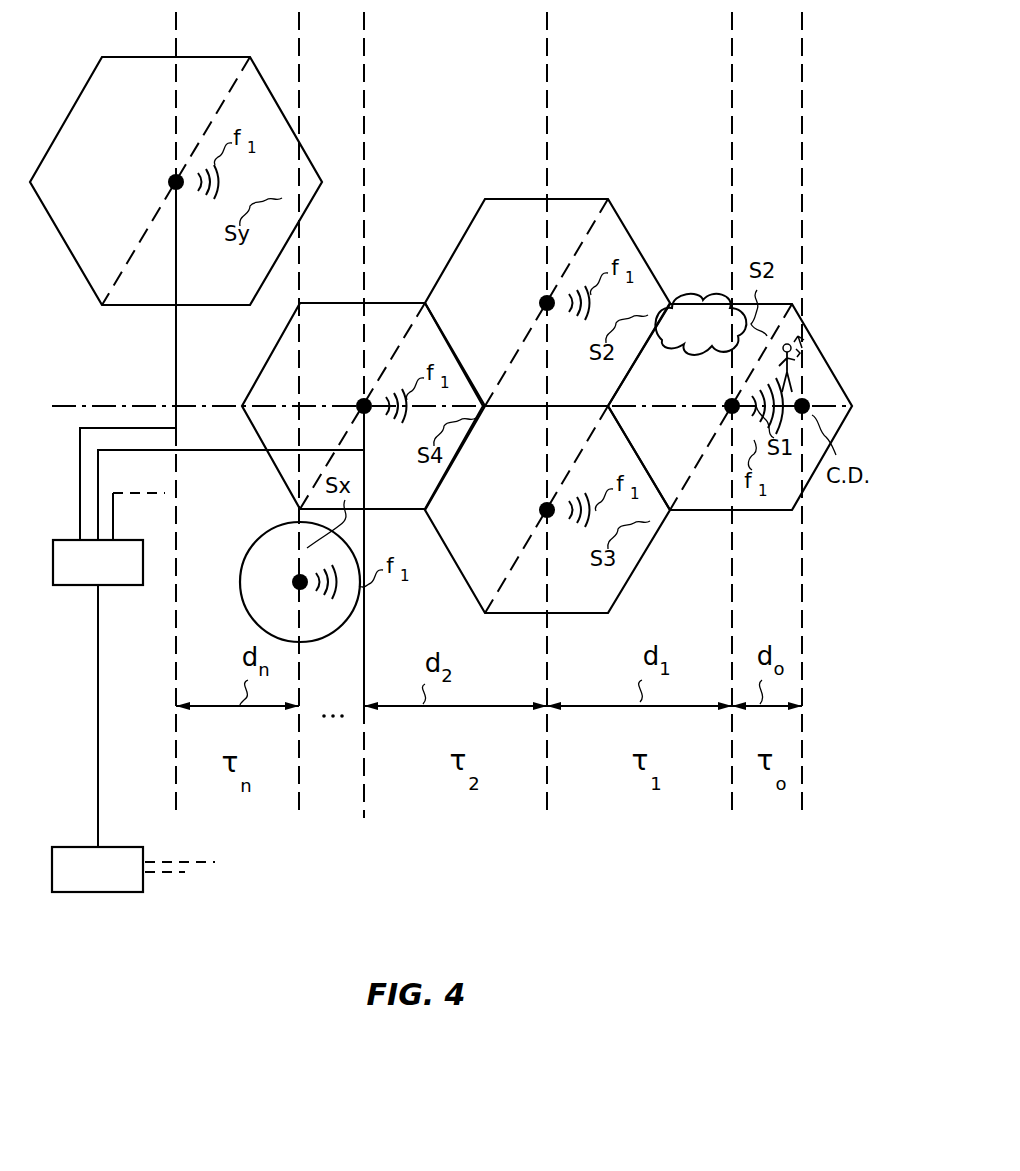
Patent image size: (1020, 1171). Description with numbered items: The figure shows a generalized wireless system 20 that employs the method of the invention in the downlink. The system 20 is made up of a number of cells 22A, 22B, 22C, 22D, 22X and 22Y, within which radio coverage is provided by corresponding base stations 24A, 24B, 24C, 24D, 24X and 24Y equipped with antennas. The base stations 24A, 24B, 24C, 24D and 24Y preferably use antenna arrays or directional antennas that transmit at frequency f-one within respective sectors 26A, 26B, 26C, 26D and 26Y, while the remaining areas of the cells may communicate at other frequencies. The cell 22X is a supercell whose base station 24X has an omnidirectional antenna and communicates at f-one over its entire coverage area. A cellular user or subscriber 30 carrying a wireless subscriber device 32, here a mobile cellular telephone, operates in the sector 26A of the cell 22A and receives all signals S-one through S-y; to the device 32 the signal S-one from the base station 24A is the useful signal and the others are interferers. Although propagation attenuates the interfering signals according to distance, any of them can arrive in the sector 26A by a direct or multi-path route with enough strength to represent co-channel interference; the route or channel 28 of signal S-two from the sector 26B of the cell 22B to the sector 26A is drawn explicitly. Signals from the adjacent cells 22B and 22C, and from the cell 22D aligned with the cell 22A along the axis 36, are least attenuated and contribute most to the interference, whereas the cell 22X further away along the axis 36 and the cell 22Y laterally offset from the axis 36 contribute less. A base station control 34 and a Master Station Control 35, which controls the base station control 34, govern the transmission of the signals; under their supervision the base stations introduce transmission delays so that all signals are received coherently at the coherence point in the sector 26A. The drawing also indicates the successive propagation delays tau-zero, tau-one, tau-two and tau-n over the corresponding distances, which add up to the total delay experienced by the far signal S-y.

The wireless system 20 is at (616, 77).
The cell Y 22Y is at (234, 57).
The base station Y 24Y is at (176, 182).
The sector Y 26Y is at (278, 125).
The cell D 22D is at (396, 304).
The base station D 24D is at (362, 404).
The sector D 26D is at (427, 332).
The cell B 22B is at (515, 198).
The base station B 24B is at (546, 303).
The sector B 26B is at (610, 234).
The cell C 22C is at (462, 579).
The base station C 24C is at (547, 511).
The sector C 26C is at (631, 555).
The cell A 22A is at (690, 511).
The base station A 24A is at (728, 413).
The sector A 26A is at (790, 503).
The cell X (supercell) 22X is at (286, 525).
The base station X 24X is at (294, 581).
The channel 28 is at (704, 296).
The cellular user or subscriber 30 is at (812, 360).
The wireless subscriber device 32 is at (802, 346).
The base station control (BSC) 34 is at (127, 588).
The Master Station Control (MSC) 35 is at (85, 846).
The axis 36 is at (84, 404).